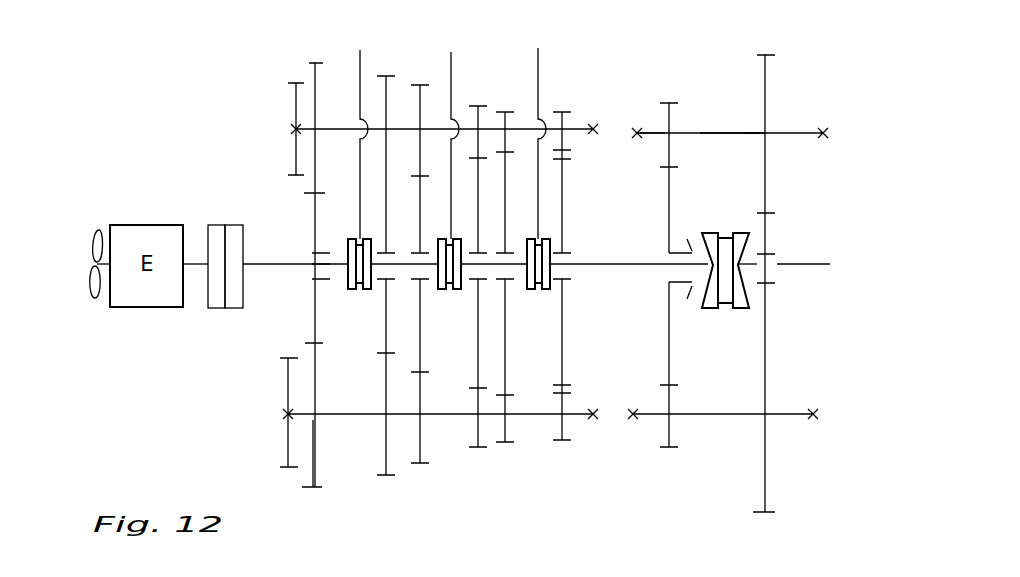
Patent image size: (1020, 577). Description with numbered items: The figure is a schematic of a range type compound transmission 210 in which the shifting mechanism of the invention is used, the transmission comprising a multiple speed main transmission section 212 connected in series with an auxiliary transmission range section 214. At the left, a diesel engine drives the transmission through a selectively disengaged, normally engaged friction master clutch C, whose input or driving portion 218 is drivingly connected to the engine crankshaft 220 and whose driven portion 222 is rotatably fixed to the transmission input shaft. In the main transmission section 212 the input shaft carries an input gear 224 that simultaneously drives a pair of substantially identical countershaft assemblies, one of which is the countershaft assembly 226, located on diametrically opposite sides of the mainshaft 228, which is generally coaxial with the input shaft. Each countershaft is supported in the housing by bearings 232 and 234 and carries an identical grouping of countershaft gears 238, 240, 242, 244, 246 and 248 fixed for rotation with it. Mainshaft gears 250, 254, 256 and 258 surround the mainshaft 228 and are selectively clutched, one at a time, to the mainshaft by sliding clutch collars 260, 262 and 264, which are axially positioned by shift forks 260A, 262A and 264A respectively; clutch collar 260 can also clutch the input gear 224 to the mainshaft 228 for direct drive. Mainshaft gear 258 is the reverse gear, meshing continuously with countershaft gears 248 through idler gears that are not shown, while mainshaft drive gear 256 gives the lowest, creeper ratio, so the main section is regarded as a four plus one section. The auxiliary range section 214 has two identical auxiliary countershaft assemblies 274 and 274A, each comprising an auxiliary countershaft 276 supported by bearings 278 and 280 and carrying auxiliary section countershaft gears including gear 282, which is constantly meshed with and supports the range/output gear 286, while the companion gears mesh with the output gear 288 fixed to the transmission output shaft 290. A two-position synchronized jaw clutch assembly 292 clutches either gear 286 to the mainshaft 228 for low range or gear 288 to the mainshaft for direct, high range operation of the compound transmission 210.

The range type compound transmission 210 is at (626, 97).
The main transmission section 212 is at (411, 75).
The auxiliary transmission range section 214 is at (729, 82).
The input or driving portion 218 is at (218, 312).
The engine crankshaft 220 is at (192, 262).
The driven portion 222 is at (235, 312).
The input gear 224 is at (313, 205).
The countershaft assembly 226 is at (339, 128).
The mainshaft 228 is at (628, 270).
The bearing 232 is at (285, 410).
The bearing 234 is at (600, 420).
The countershaft gear 238 is at (311, 470).
The countershaft gear 240 is at (384, 457).
The countershaft gear 242 is at (417, 448).
The countershaft gear 244 is at (473, 438).
The countershaft gear 246 is at (500, 430).
The countershaft gear 248 is at (560, 430).
The mainshaft gear 250 is at (386, 337).
The mainshaft gear 254 is at (478, 385).
The mainshaft drive gear 256 is at (505, 392).
The mainshaft gear 258 is at (562, 380).
The sliding clutch collar 260 is at (348, 283).
The shift fork 260A is at (360, 222).
The sliding clutch collar 262 is at (438, 286).
The shift fork 262A is at (451, 80).
The sliding clutch collar 264 is at (528, 285).
The shift fork 264A is at (538, 88).
The auxiliary countershaft assembly 274 is at (706, 131).
The auxiliary countershaft assembly 274A is at (723, 418).
The auxiliary countershaft 276 is at (753, 133).
The bearing 278 is at (638, 138).
The bearing 280 is at (823, 130).
The auxiliary section countershaft gear 282 is at (670, 118).
The range/output gear 286 is at (668, 207).
The output gear 288 is at (765, 229).
The transmission output shaft 290 is at (802, 266).
The two-position synchronized jaw clutch assembly 292 is at (737, 310).
The friction master clutch C is at (204, 294).